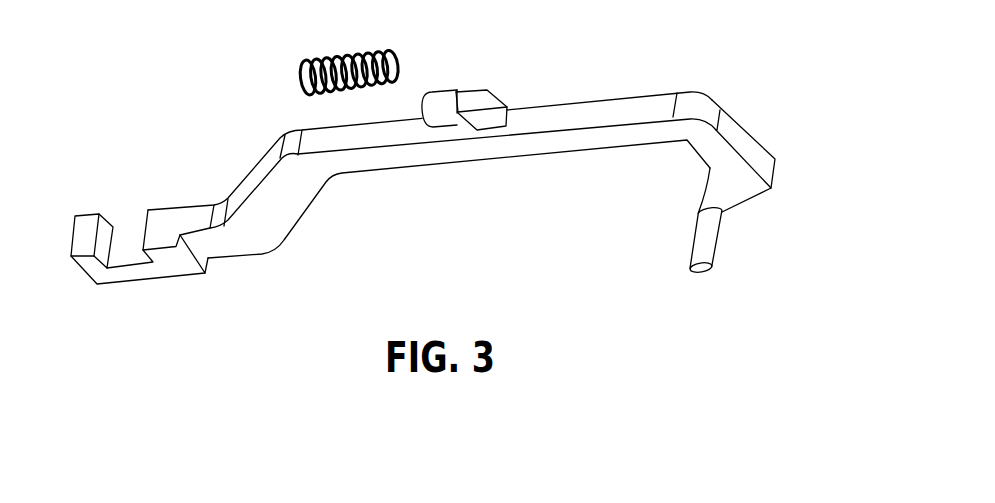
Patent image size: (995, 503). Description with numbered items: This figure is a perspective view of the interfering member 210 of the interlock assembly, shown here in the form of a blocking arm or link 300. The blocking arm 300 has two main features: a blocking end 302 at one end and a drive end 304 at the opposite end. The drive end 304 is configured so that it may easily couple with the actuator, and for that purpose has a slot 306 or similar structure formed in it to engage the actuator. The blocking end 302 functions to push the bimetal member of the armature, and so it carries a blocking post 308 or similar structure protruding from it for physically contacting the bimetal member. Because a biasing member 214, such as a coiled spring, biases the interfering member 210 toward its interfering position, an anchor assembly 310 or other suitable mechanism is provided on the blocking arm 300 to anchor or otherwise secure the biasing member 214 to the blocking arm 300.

The interfering member 210 is at (445, 205).
The biasing member 214 is at (332, 50).
The blocking arm 300 is at (465, 153).
The blocking end 302 is at (763, 188).
The drive end 304 is at (134, 272).
The slot 306 is at (123, 215).
The blocking post 308 is at (716, 258).
The anchor assembly 310 is at (468, 62).